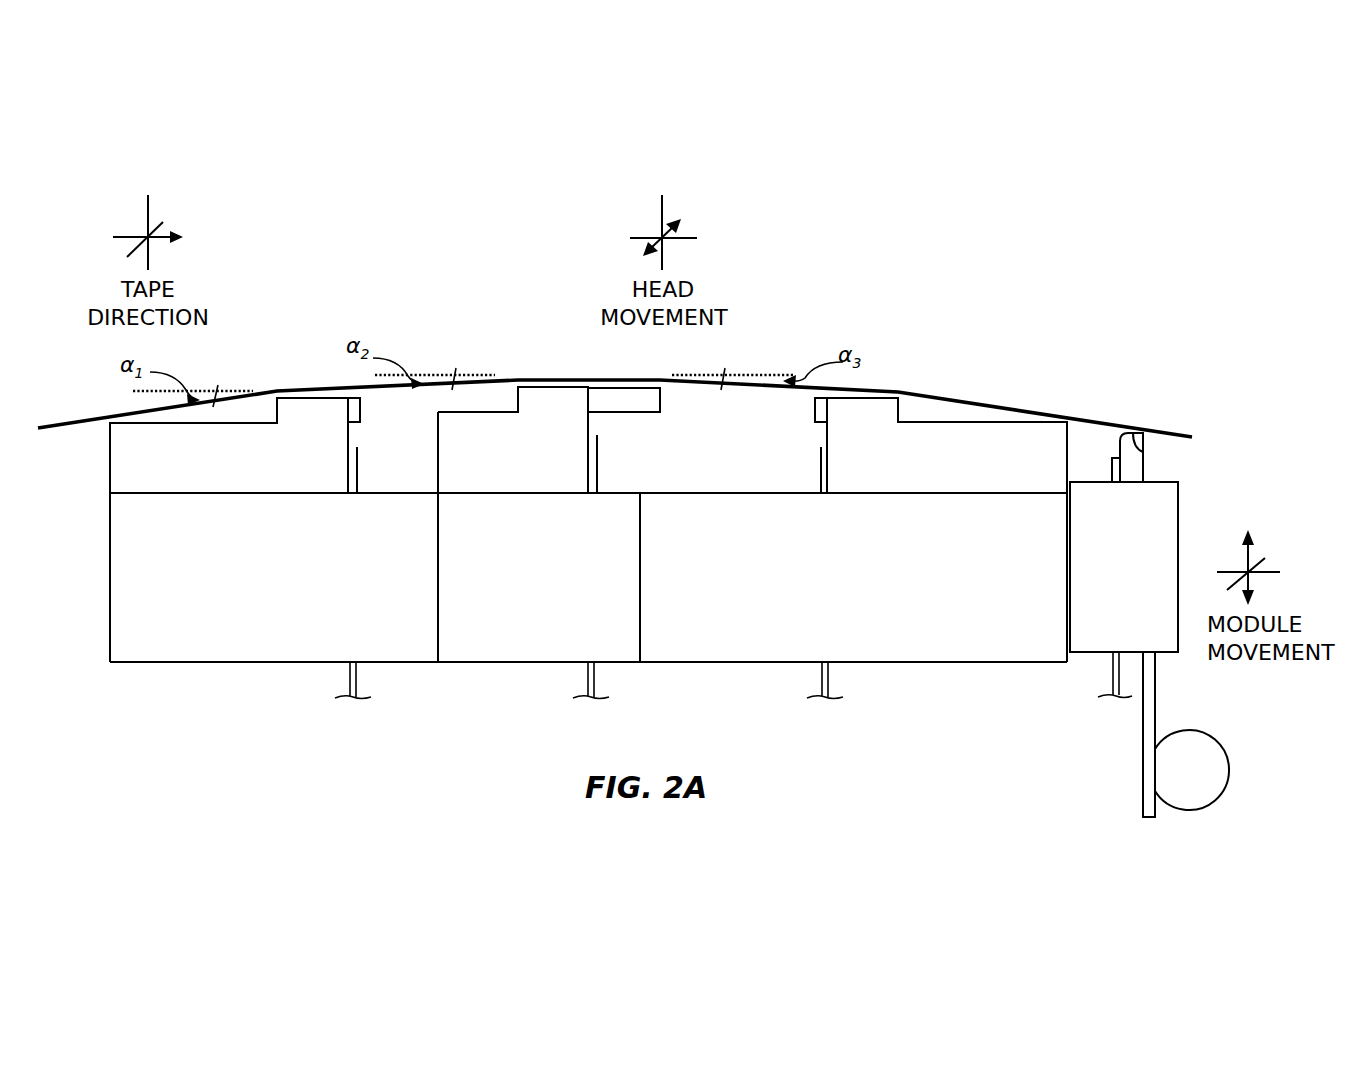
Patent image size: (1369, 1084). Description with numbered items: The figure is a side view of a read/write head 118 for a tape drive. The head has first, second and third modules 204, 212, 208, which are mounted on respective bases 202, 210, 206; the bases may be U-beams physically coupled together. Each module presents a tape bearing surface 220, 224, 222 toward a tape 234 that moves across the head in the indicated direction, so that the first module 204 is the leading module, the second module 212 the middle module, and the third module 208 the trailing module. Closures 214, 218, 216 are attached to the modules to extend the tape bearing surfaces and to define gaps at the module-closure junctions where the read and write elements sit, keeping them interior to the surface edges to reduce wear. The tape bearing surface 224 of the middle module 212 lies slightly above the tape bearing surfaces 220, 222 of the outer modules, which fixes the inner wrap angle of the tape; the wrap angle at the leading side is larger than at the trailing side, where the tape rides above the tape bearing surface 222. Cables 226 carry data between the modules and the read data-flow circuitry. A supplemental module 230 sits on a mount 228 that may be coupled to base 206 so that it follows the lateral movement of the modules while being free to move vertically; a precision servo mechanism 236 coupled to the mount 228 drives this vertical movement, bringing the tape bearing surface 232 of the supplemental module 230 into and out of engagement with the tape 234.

The read/write head 118 is at (886, 316).
The base 202 is at (164, 652).
The first module 204 is at (164, 484).
The base 206 is at (1051, 652).
The third module 208 is at (1051, 485).
The base 210 is at (633, 654).
The second module 212 is at (487, 473).
The closure 214 is at (362, 410).
The closure 216 is at (814, 410).
The closure 218 is at (648, 412).
The tape bearing surface 220 is at (316, 399).
The tape bearing surface 222 is at (860, 399).
The tape bearing surface 224 is at (565, 388).
The cables 226 is at (358, 672).
The mount 228 is at (1174, 641).
The supplemental module 230 is at (1143, 468).
The tape bearing surface 232 is at (1143, 450).
The tape 234 is at (1093, 413).
The precision servo mechanism 236 is at (1143, 780).